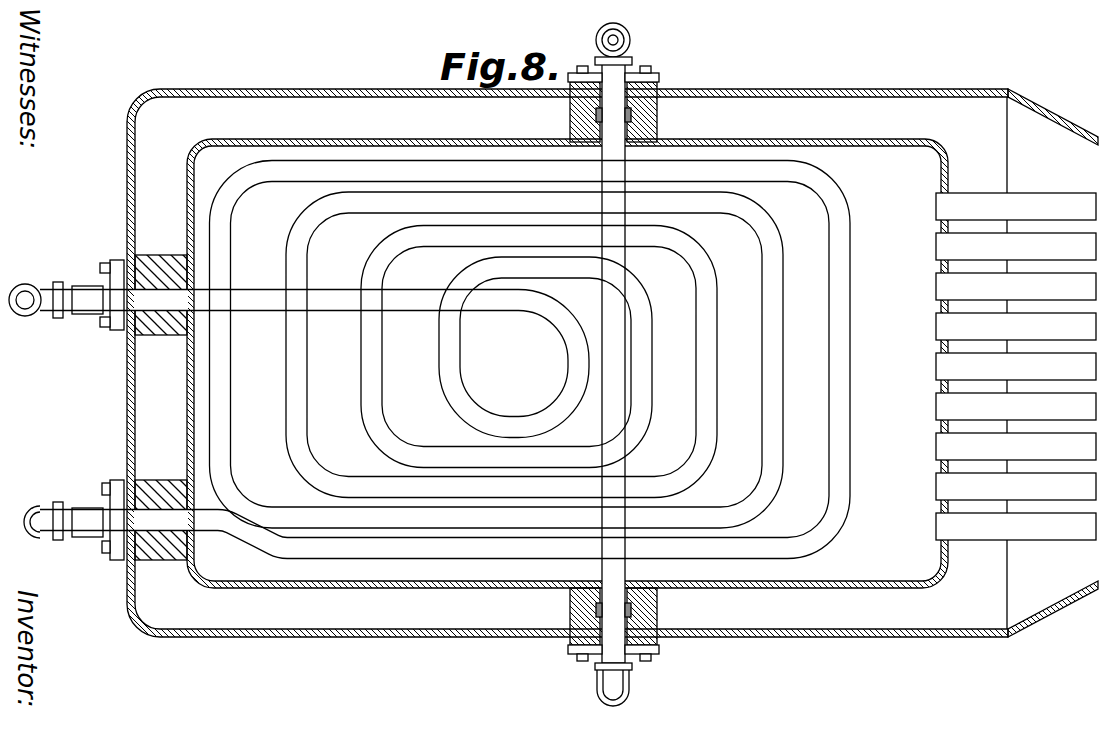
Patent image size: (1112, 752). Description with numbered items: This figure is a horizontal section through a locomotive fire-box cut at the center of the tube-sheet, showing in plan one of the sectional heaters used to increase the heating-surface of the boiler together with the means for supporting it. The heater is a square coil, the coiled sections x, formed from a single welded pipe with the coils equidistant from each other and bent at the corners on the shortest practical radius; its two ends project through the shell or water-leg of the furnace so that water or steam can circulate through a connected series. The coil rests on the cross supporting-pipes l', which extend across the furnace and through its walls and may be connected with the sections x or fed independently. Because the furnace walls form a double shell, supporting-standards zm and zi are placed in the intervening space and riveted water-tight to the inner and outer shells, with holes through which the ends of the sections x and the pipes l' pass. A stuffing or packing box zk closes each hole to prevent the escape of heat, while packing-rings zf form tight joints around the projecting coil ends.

The coiled sections x is at (445, 361).
The cross supporting-pipes l' is at (613, 364).
The stuffing or packing box zk is at (626, 363).
The supporting-standard zi is at (660, 610).
The packing-rings zf is at (109, 393).
The supporting-standard zm is at (161, 394).